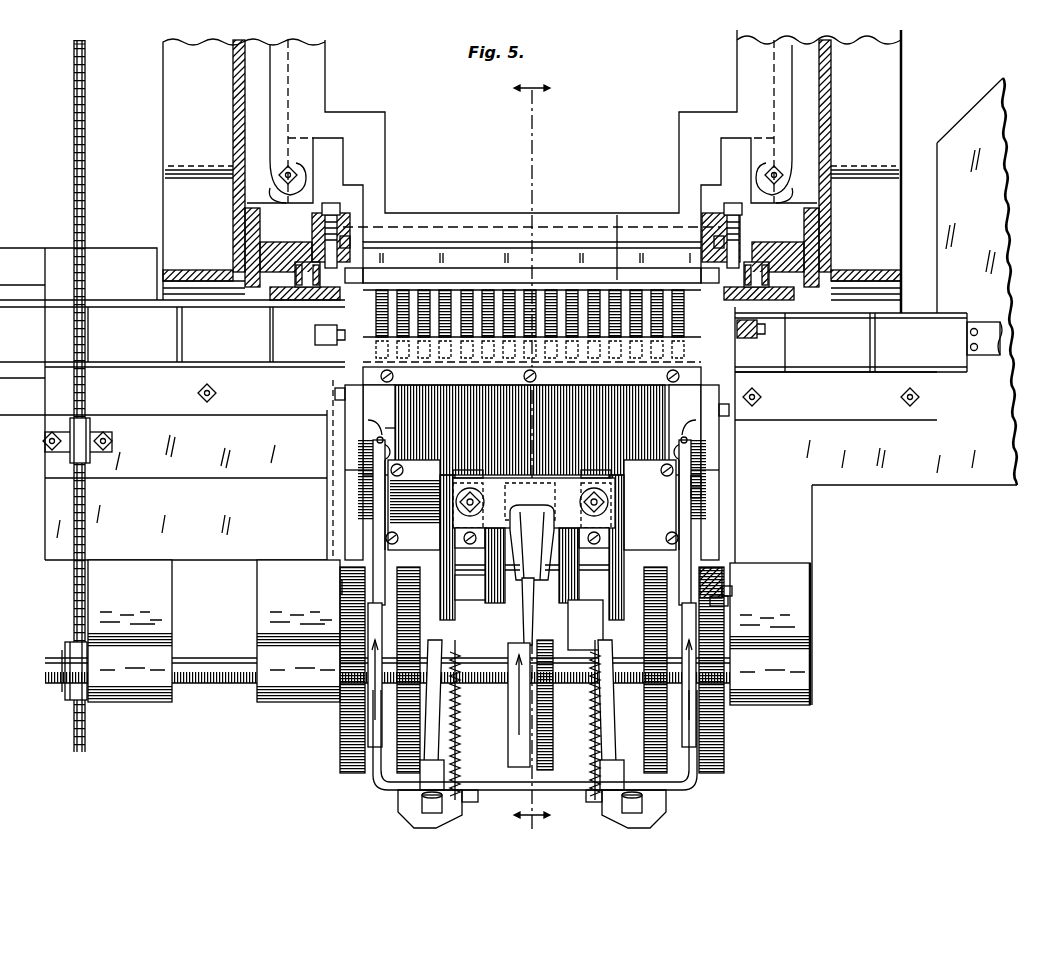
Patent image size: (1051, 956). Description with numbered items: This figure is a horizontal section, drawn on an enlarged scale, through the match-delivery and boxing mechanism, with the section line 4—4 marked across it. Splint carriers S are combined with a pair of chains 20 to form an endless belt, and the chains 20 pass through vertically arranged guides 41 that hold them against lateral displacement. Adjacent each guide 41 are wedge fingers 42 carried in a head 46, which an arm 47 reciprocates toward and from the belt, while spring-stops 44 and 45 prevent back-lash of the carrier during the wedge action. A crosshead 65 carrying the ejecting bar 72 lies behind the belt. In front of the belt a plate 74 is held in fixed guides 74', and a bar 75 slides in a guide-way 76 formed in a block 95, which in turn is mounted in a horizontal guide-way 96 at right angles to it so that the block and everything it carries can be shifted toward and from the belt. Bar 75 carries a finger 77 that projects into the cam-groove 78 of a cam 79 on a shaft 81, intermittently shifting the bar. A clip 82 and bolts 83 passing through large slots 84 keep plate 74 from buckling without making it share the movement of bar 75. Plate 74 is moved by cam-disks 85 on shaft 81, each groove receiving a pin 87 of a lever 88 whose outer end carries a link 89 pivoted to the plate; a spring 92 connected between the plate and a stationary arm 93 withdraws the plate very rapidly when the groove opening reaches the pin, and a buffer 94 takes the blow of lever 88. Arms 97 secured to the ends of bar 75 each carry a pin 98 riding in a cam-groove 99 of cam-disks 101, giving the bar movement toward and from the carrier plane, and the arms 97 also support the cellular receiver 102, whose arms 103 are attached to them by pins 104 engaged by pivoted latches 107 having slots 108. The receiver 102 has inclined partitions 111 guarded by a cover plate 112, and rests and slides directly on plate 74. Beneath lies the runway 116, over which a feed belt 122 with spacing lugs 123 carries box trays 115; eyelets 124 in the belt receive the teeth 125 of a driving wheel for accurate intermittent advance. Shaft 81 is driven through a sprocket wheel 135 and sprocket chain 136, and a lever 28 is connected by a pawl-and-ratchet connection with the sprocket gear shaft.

The section line 4— 4 is at (532, 452).
The splint carrier S is at (613, 237).
The chains 20 is at (275, 303).
The lever 28 is at (175, 128).
The guides 41 is at (287, 242).
The wedge fingers 42 is at (382, 282).
The spring-stop 44 is at (722, 248).
The spring-stop 45 is at (330, 258).
The head 46 is at (335, 393).
The arm 47 is at (312, 345).
The crosshead 65 is at (352, 118).
The ejecting bar 72 is at (468, 243).
The plate 74 is at (502, 522).
The fixed guides 74' is at (307, 493).
The bar 75 is at (380, 525).
The guide-way 76 is at (722, 522).
The finger 77 is at (534, 525).
The cam-groove 78 is at (526, 626).
The cam 79 is at (520, 705).
The shaft 81 is at (190, 672).
The clip 82 is at (720, 480).
The bolts 83 is at (725, 492).
The slots 84 is at (531, 589).
The cam-disks 85 is at (345, 766).
The pin 87 is at (400, 770).
The lever 88 is at (430, 795).
The link 89 is at (452, 705).
The spring 92 is at (455, 757).
The stationary arm 93 is at (466, 815).
The buffer 94 is at (440, 803).
The block 95 is at (600, 585).
The horizontal guide-way 96 is at (450, 598).
The arms 97 is at (385, 495).
The pin 98 is at (345, 590).
The cam-groove 99 is at (728, 602).
The cam-disks 101 is at (345, 737).
The cellular receiver 102 is at (535, 296).
The arms 103 is at (375, 418).
The pin 104 is at (532, 373).
The pivoted latch 107 is at (395, 440).
The slot 108 is at (388, 432).
The partitions 111 is at (550, 298).
The cover plate 112 is at (532, 419).
The box trays 115 is at (544, 342).
The runway 116 is at (866, 478).
The feed belt 122 is at (970, 316).
The lugs 123 is at (976, 357).
The eyelets 124 is at (836, 390).
The teeth 125 is at (886, 375).
The sprocket wheel 135 is at (86, 732).
The sprocket chain 136 is at (72, 614).